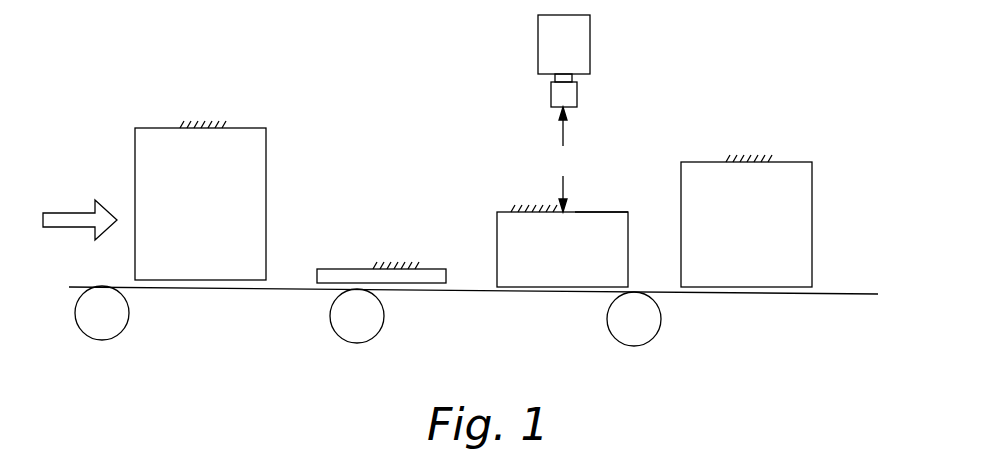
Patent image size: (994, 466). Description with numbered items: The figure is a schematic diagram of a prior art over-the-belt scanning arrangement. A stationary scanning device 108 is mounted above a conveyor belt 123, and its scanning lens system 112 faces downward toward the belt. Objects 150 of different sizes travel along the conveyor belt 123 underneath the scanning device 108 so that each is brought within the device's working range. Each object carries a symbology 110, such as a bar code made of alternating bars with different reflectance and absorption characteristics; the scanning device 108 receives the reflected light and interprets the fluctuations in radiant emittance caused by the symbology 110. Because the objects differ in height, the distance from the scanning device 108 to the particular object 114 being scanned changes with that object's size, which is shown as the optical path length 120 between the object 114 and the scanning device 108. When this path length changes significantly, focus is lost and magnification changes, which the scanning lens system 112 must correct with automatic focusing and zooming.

The scanning device 108 is at (538, 60).
The scanning lens system 112 is at (577, 97).
The symbology 110 is at (530, 200).
The object being scanned 114 is at (612, 212).
The optical path length 120 is at (569, 159).
The conveyor belt 123 is at (845, 294).
The objects 150 is at (247, 128).